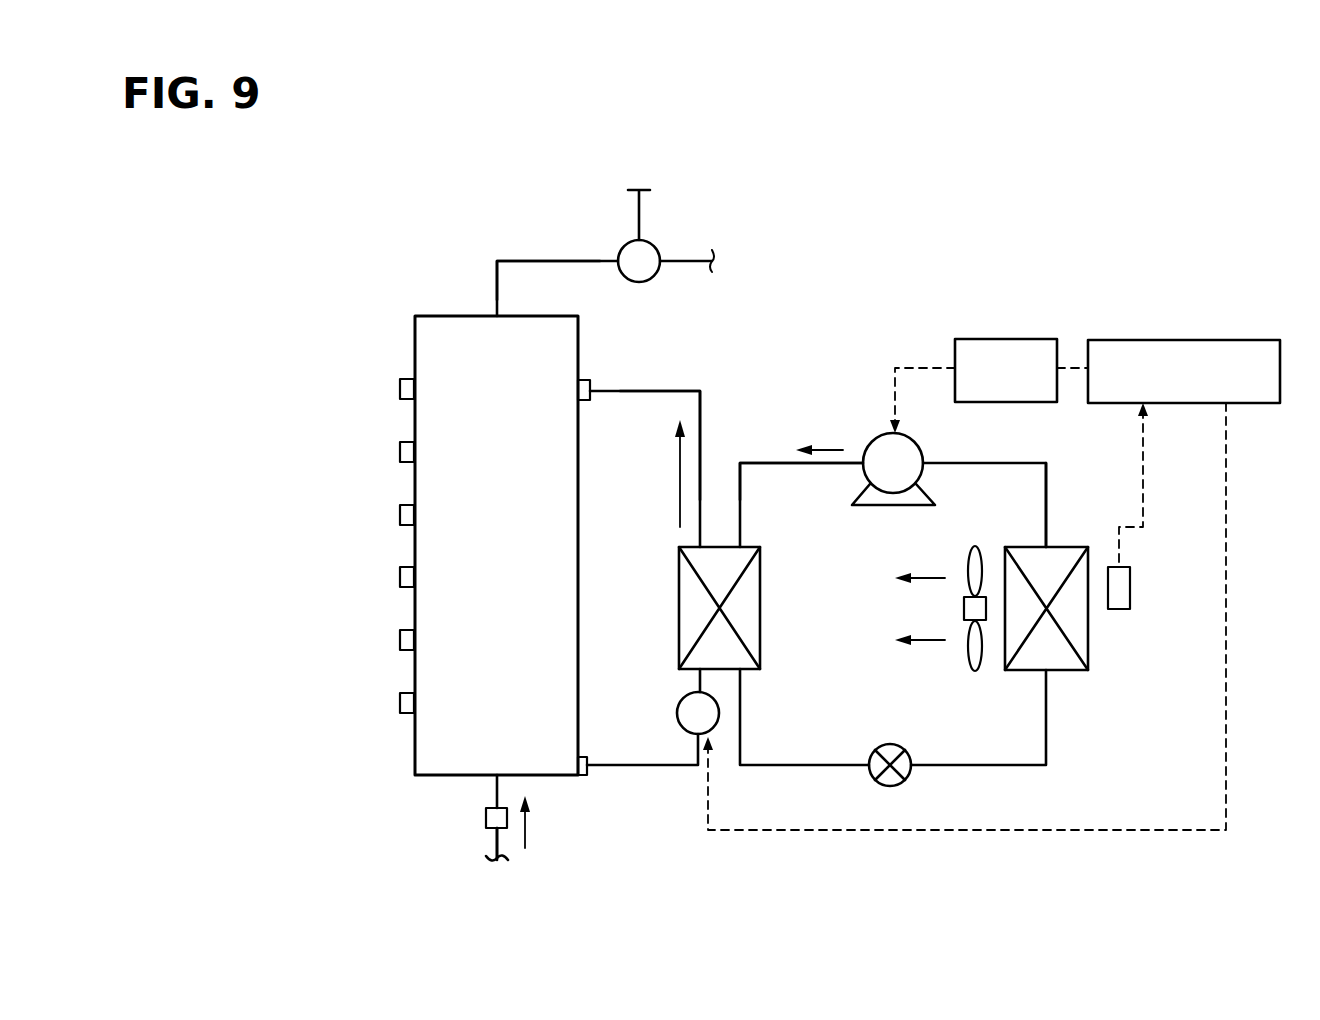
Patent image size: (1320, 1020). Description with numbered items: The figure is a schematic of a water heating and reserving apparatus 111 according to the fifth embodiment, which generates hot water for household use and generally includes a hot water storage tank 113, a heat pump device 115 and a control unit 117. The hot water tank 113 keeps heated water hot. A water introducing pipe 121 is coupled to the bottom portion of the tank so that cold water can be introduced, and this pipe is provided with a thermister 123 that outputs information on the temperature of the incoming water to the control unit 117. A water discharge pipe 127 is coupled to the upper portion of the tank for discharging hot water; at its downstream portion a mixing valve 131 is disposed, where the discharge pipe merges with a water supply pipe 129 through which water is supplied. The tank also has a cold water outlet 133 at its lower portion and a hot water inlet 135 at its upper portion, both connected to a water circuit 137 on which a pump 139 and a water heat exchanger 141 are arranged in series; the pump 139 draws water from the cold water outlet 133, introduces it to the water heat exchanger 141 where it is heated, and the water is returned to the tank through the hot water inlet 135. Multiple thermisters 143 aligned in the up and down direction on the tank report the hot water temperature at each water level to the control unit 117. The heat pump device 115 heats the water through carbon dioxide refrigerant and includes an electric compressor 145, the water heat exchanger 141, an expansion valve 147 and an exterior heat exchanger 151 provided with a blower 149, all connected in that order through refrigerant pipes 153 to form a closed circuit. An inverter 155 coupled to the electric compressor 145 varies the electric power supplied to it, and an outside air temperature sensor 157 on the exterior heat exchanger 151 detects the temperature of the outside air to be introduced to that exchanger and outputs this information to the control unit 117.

The water heating and reserving apparatus 111 is at (878, 240).
The hot water storage tank 113 is at (435, 345).
The heat pump device 115 is at (852, 428).
The control unit 117 is at (1100, 340).
The water introducing pipe 121 is at (497, 843).
The thermister 123 is at (485, 818).
The water discharge pipe 127 is at (538, 261).
The water supply pipe 129 is at (639, 210).
The mixing valve 131 is at (622, 243).
The cold water outlet 133 is at (590, 770).
The hot water inlet 135 is at (590, 385).
The water circuit 137 is at (663, 391).
The pump 139 is at (680, 705).
The water heat exchanger 141 is at (762, 612).
The thermisters 143 is at (400, 389).
The electric compressor 145 is at (925, 450).
The expansion valve 147 is at (905, 780).
The blower 149 is at (985, 565).
The exterior heat exchanger 151 is at (1088, 655).
The refrigerant pipes 153 is at (1048, 490).
The inverter 155 is at (975, 339).
The outside air temperature sensor 157 is at (1130, 587).